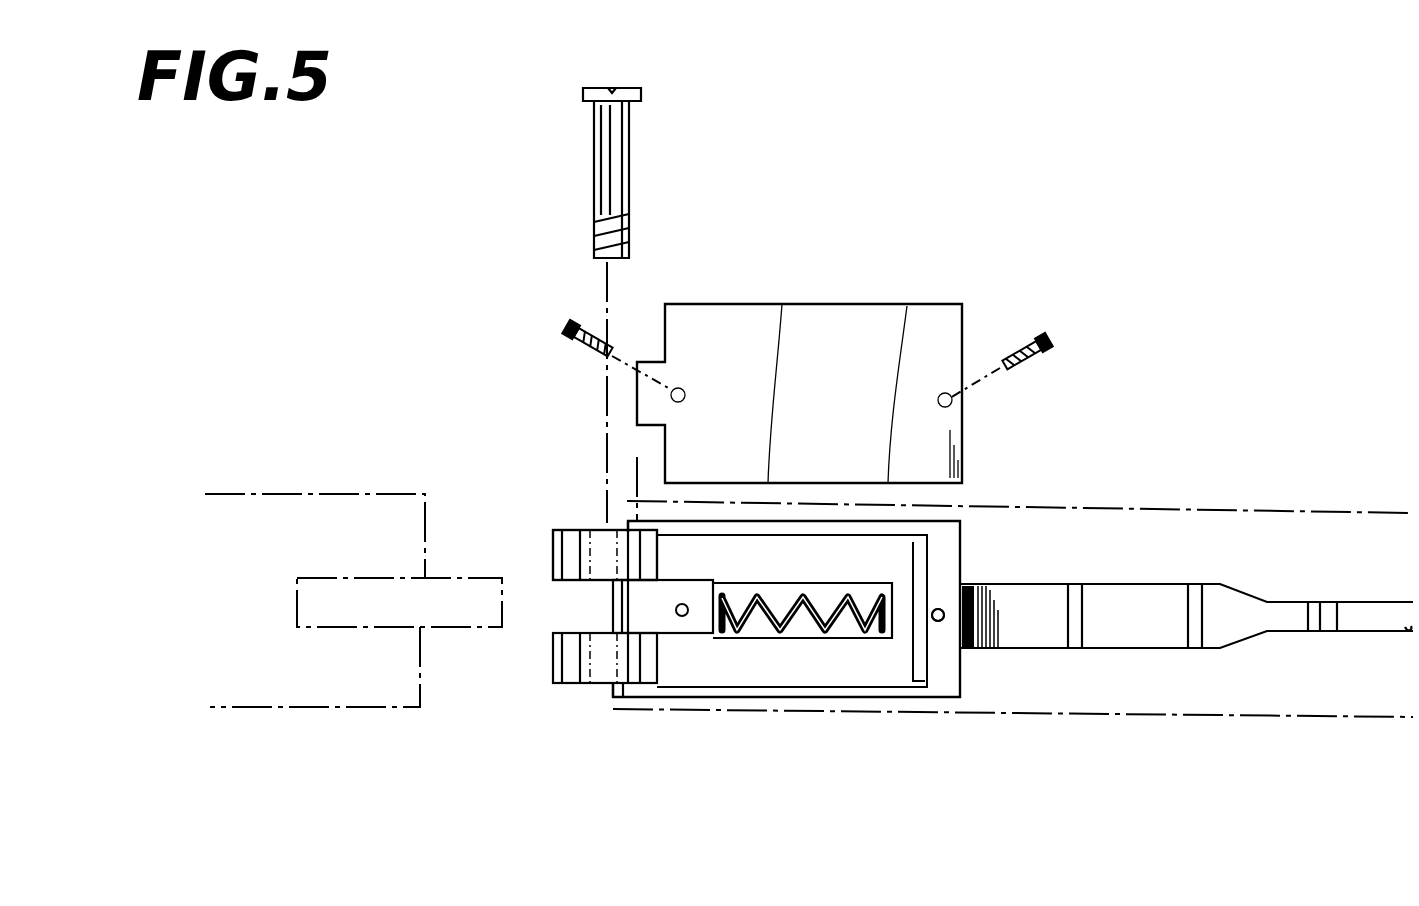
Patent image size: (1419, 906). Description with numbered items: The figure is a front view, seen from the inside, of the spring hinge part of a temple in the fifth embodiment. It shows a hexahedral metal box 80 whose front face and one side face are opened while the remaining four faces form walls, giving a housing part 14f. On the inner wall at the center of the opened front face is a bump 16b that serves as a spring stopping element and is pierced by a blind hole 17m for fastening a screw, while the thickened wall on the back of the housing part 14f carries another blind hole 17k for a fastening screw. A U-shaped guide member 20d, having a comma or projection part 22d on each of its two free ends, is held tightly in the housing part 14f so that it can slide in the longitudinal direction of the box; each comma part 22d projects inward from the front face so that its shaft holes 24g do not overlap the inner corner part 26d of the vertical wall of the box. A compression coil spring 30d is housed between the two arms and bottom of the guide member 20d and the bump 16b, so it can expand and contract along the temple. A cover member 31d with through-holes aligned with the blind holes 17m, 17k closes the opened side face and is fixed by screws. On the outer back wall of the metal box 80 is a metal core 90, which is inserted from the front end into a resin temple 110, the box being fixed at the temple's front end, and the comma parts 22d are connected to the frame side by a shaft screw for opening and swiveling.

The cover member 31d is at (860, 347).
The hexahedral metal box 80 is at (948, 560).
The blind hole for fastening screw 17k is at (940, 607).
The resin temple 110 is at (1135, 543).
The shaft holes 24g is at (600, 533).
The inner corner part 26d is at (617, 698).
The comma or projection part 22d is at (552, 663).
The bump 16b is at (663, 605).
The blind hole for fastening screw 17m is at (682, 617).
The compression coil spring 30d is at (770, 628).
The housing part 14f is at (848, 688).
The U-shaped guide member 20d is at (888, 660).
The metal core 90 is at (1113, 623).